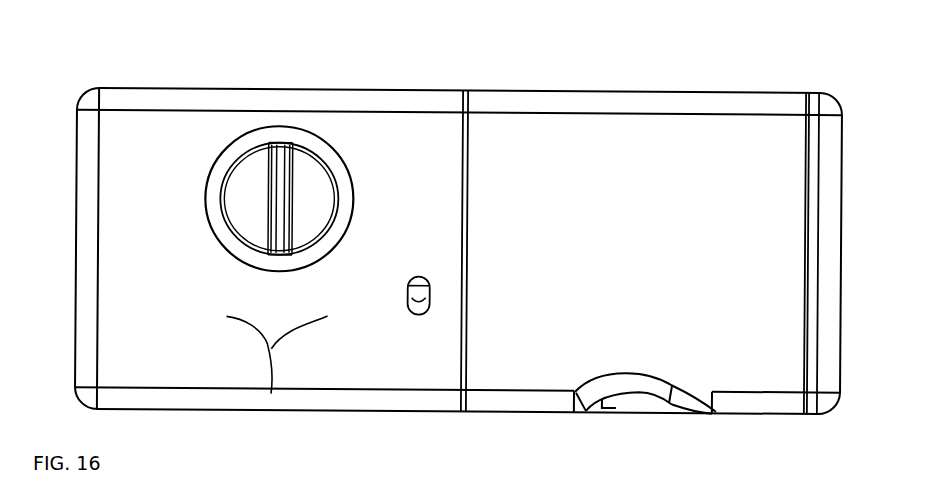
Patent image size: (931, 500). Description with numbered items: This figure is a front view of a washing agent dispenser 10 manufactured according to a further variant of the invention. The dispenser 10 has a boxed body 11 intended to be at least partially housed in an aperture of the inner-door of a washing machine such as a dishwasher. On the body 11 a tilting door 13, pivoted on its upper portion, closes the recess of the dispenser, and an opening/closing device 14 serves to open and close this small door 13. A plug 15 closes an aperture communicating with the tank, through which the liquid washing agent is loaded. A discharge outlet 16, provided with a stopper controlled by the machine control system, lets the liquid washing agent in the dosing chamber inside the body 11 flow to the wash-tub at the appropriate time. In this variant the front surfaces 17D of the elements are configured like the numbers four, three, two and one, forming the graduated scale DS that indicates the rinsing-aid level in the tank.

The washing agent dispenser 10 is at (150, 43).
The boxed body 11 is at (70, 144).
The tilting door 13 is at (618, 160).
The opening/closing device 14 is at (637, 400).
The plug 15 is at (305, 167).
The discharge outlet 16 is at (418, 316).
The front surfaces 17D is at (328, 299).
The display section DS is at (272, 395).